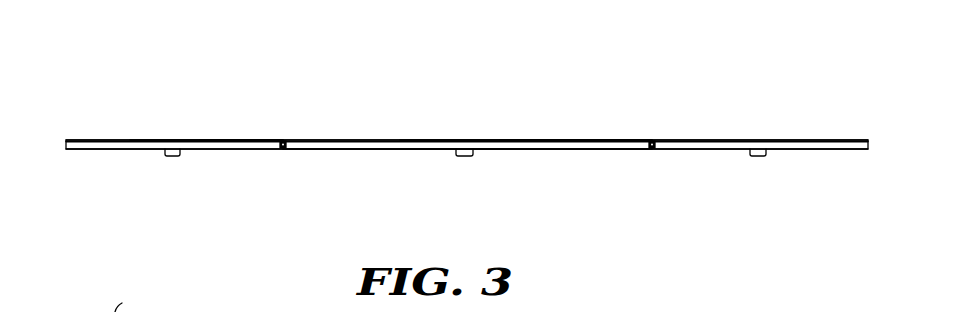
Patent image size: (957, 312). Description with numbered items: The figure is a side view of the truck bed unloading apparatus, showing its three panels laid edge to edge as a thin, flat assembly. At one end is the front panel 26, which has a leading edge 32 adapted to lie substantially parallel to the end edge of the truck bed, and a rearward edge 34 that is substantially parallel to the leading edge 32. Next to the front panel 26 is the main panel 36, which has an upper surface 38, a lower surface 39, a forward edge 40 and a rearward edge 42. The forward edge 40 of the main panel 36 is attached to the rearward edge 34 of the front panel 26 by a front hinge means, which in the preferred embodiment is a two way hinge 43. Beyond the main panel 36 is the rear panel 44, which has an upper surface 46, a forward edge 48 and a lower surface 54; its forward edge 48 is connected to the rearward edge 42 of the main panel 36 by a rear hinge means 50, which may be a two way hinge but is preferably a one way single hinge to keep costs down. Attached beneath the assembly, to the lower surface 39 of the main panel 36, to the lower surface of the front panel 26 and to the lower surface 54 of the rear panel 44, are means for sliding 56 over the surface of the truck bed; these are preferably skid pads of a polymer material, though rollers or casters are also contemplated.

The leading edge 32 is at (873, 142).
The rearward edge 34 is at (683, 140).
The main panel 36 is at (497, 140).
The upper surface 38 is at (365, 140).
The lower surface 39 is at (533, 150).
The forward edge 40 is at (632, 140).
The rearward edge 42 is at (292, 140).
The two way hinge 43 is at (650, 140).
The rear panel 44 is at (187, 140).
The upper surface 46 is at (133, 140).
The forward edge 48 is at (281, 141).
The rear hinge means 50 is at (282, 143).
The lower surface 54 is at (107, 150).
The means for sliding 56 is at (165, 157).
The front panel 26 is at (122, 306).